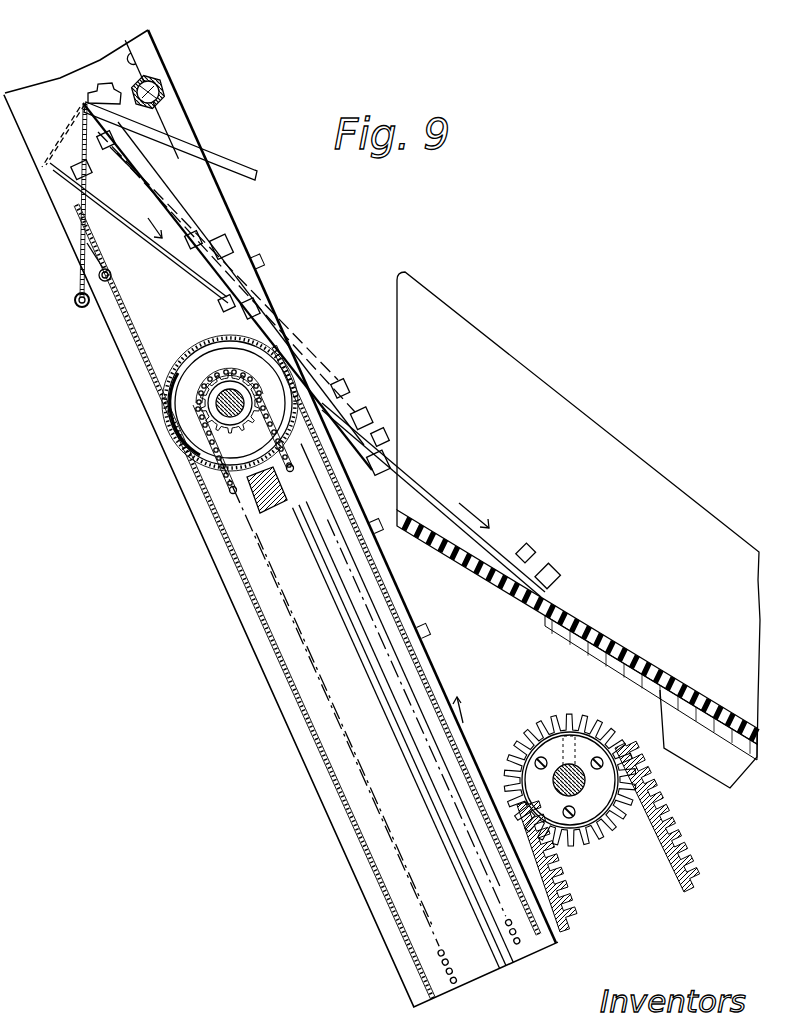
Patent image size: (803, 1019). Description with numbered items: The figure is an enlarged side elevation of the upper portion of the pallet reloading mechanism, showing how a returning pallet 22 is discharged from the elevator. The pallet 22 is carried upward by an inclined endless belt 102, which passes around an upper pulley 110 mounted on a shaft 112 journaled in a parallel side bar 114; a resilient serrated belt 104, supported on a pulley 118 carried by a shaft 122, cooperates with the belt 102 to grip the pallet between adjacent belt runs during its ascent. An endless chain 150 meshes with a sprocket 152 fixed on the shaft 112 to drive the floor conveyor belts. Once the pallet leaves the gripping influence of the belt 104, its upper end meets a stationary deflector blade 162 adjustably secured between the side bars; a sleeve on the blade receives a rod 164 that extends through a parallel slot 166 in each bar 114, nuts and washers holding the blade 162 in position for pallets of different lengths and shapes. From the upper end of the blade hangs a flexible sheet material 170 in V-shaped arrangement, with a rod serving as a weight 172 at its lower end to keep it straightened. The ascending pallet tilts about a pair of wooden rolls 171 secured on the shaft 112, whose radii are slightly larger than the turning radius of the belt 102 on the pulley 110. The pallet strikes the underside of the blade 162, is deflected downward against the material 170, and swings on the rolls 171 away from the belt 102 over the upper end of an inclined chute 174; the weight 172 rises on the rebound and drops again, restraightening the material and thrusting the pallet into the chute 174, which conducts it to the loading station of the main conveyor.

The pallet 22 is at (170, 187).
The inclined endless belt 102 is at (301, 714).
The resilient inclined endless belt 104 is at (678, 848).
The upper pulley 110 is at (203, 363).
The shaft 112 is at (215, 400).
The side bar 114 is at (263, 262).
The pulley 118 is at (600, 825).
The shaft 122 is at (575, 770).
The endless chain 150 is at (232, 488).
The sprocket 152 is at (237, 440).
The deflector blade 162 is at (233, 160).
The rod 164 is at (162, 92).
The slot 166 is at (145, 55).
The flexible sheet material 170 is at (82, 243).
The roll 171 is at (172, 367).
The weight 172 is at (79, 303).
The chute 174 is at (625, 452).